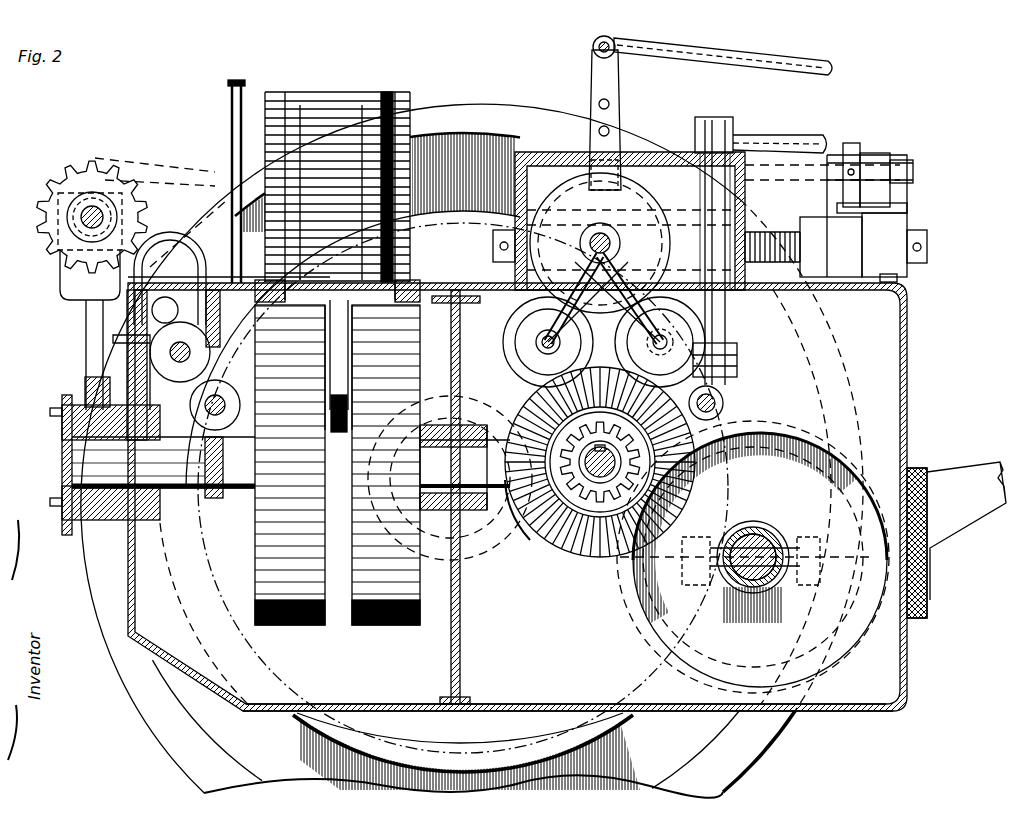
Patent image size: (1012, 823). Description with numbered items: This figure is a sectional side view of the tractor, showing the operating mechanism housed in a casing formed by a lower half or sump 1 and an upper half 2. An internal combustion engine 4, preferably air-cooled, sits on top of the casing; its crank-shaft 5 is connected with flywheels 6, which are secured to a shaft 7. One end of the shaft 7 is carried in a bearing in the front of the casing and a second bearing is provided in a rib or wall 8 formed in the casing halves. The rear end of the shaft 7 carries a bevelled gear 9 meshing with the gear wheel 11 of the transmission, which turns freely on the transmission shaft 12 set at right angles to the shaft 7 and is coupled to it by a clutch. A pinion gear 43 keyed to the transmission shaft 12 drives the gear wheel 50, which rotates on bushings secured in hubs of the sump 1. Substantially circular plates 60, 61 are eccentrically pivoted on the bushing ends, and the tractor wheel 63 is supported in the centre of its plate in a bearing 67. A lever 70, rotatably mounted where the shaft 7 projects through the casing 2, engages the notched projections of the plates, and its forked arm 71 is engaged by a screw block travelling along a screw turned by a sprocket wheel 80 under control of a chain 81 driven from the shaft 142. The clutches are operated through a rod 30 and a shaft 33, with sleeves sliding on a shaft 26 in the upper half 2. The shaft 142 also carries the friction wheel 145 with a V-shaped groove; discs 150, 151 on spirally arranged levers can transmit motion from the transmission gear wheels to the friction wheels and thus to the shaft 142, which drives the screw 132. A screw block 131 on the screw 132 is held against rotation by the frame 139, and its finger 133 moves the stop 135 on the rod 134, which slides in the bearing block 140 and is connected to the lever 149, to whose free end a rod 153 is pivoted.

The lower half or sump 1 is at (845, 712).
The upper half 2 is at (908, 332).
The internal combustion engine 4 is at (388, 92).
The crank-shaft 5 is at (338, 388).
The flywheels 6 is at (355, 520).
The shaft 7 is at (245, 495).
The rib or wall 8 is at (461, 356).
The bevelled gear 9 is at (530, 540).
The gear wheel 11 is at (578, 556).
The transmission shaft 12 is at (556, 557).
The shaft 26 is at (724, 404).
The rod 30 is at (800, 136).
The shaft 33 is at (726, 318).
The pinion gear 43 is at (580, 437).
The gear wheel 50 is at (627, 626).
The circular plate 60 is at (548, 750).
The circular plate 61 is at (585, 735).
The tractor wheel 63 is at (762, 750).
The bearing 67 is at (490, 545).
The lever 70 is at (145, 378).
The arm 71 is at (85, 320).
The sprocket wheel 80 is at (44, 198).
The chain 81 is at (165, 165).
The screw block 131 is at (838, 285).
The screw 132 is at (928, 246).
The finger 133 is at (832, 153).
The rod 134 is at (915, 172).
The stop 135 is at (857, 145).
The frame 139 is at (915, 278).
The bearing block 140 is at (890, 157).
The shaft 142 is at (621, 247).
The friction wheel 145 is at (563, 197).
The lever 149 is at (592, 72).
The disc 150 is at (738, 370).
The disc 151 is at (506, 325).
The rod 153 is at (790, 60).